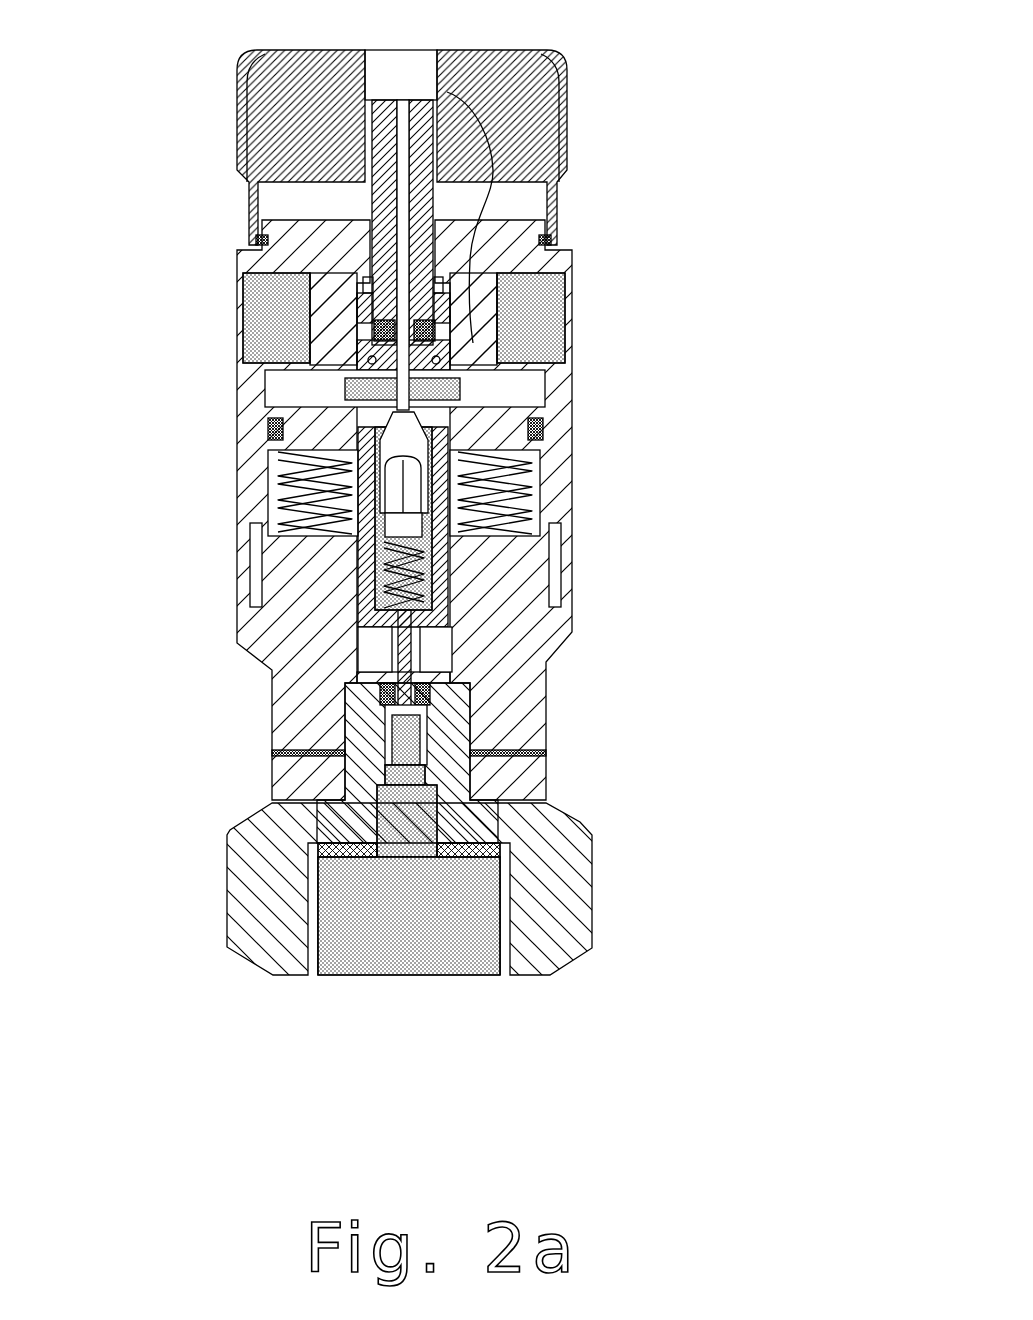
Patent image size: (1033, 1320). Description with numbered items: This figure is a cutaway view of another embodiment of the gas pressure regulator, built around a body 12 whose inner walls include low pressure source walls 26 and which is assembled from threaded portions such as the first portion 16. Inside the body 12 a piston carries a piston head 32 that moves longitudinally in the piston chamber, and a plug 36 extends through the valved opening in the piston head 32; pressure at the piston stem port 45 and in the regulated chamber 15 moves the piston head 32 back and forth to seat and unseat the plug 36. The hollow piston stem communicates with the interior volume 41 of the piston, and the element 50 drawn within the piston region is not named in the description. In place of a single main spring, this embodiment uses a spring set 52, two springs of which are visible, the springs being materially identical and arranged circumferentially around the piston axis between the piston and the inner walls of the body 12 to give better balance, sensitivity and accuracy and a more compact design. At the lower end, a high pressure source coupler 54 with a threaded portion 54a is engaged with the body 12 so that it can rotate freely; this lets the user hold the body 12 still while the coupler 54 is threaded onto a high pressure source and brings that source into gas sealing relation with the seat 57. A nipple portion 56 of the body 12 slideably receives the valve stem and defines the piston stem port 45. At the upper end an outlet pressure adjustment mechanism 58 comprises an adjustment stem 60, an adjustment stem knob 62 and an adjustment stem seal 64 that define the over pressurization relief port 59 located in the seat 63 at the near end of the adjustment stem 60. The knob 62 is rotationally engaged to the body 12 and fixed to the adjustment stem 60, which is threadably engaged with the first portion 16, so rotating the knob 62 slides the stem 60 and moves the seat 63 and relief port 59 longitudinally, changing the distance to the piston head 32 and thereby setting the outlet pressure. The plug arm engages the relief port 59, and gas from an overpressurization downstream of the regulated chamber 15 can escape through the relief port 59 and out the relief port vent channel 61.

The body 12 is at (586, 650).
The regulated chamber 15 is at (307, 390).
The first portion 16 is at (555, 392).
The low pressure source walls 26 is at (540, 310).
The piston head 32 is at (440, 500).
The plug 36 is at (375, 463).
The interior volume 41 is at (430, 590).
The piston stem port 45 is at (445, 703).
The poppet 50 is at (382, 462).
The spring set 52 is at (520, 515).
The high pressure source coupling knob or coupler 54 is at (540, 862).
The threaded portion 54a is at (500, 927).
The nipple portion 56 is at (440, 778).
The seat 57 is at (340, 860).
The outlet pressure adjustment mechanism 58 is at (490, 248).
The over pressurization relief port 59 is at (447, 340).
The adjustment stem 60 is at (483, 180).
The relief port vent channel 61 is at (400, 177).
The adjustment stem knob 62 is at (523, 90).
The seat 63 is at (320, 320).
The adjustment stem seal 64 is at (256, 233).